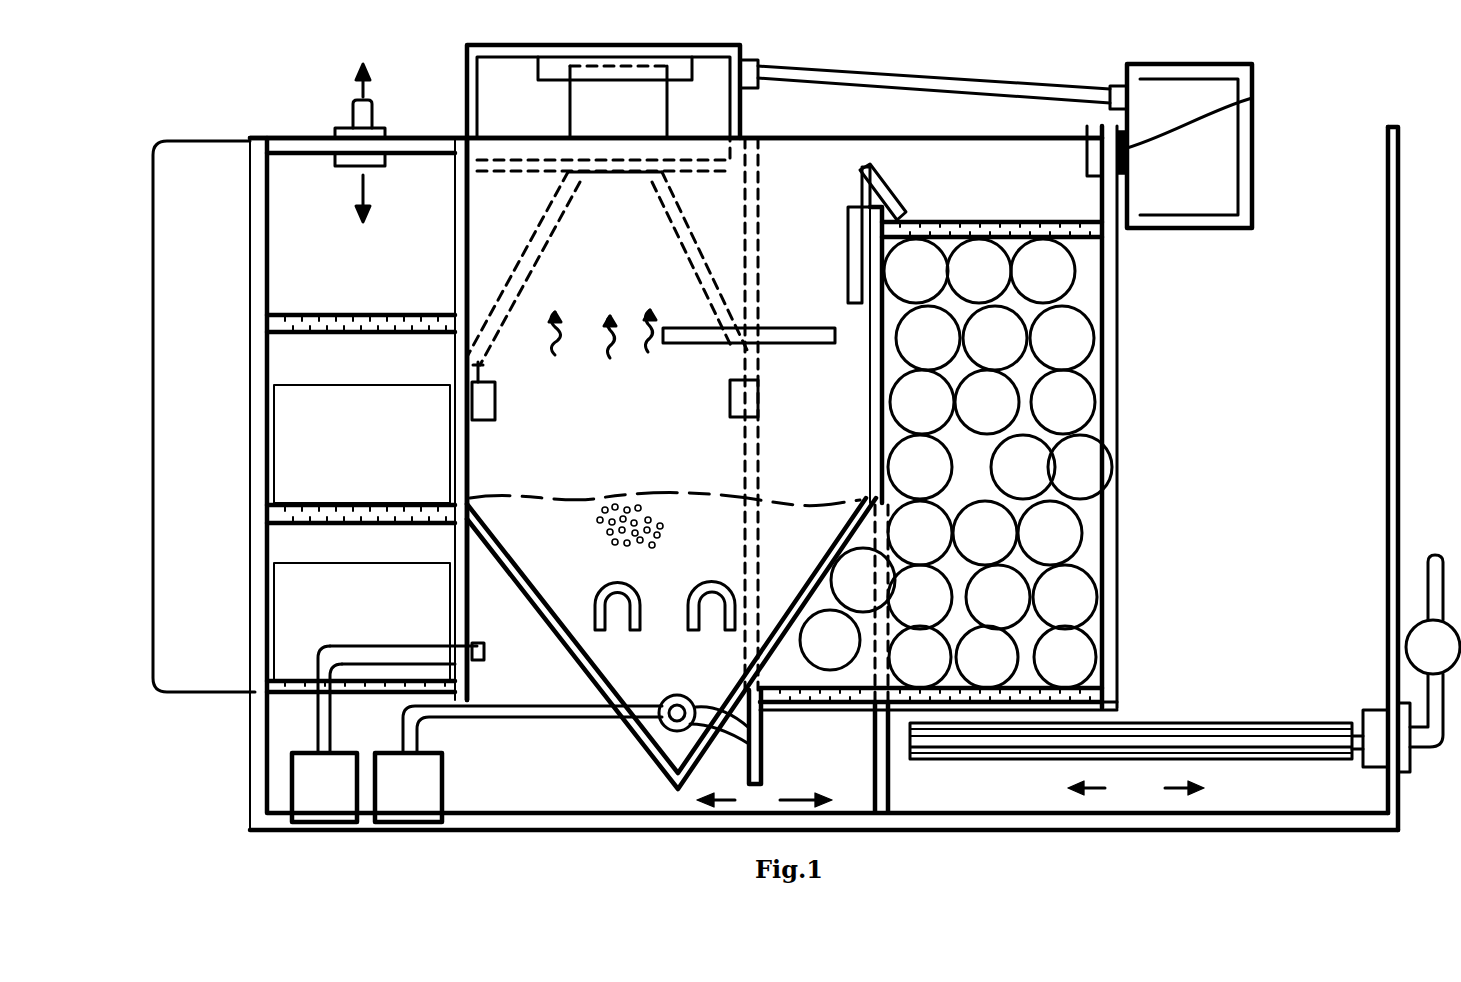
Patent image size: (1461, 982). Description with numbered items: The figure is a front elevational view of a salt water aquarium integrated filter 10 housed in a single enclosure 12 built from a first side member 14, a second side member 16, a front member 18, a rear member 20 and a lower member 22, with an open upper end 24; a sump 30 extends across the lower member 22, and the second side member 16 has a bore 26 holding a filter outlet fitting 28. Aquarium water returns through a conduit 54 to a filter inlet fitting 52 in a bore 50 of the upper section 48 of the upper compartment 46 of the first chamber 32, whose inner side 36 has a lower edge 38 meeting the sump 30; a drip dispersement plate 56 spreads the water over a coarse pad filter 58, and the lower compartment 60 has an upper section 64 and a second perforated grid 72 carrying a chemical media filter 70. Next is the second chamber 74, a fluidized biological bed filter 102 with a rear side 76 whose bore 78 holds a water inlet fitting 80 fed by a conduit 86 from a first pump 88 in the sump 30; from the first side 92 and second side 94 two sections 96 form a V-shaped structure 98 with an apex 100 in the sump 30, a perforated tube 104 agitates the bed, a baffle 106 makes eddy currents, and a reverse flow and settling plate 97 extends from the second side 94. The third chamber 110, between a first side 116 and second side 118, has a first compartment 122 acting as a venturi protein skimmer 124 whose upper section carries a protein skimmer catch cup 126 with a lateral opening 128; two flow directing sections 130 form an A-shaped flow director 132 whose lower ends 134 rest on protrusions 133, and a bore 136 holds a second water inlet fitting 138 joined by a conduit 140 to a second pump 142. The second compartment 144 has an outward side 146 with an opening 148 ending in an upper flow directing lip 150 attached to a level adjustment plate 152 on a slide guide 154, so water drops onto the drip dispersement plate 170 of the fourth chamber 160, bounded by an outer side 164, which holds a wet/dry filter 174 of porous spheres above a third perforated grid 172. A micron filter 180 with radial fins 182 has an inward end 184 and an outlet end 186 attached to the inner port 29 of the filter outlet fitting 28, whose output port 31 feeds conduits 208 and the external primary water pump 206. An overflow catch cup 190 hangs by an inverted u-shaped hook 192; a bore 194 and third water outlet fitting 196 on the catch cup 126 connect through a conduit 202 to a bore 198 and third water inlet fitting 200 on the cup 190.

The salt water aquarium integrated filter 10 is at (1354, 60).
The enclosure 12 is at (1392, 205).
The first side member 14 is at (258, 278).
The second side member 16 is at (1390, 300).
The front member 18 is at (300, 308).
The rear member 20 is at (1103, 558).
The lower member 22 is at (990, 822).
The upper end 24 is at (822, 132).
The bore 26 is at (1376, 712).
The filter outlet fitting 28 is at (1402, 773).
The inner port 29 is at (1362, 755).
The sump 30 is at (950, 798).
The output port 31 is at (1412, 748).
The first chamber 32 is at (150, 410).
The inner side 36 is at (478, 198).
The lower edge 38 is at (478, 696).
The upper compartment 46 is at (282, 372).
The upper section 48 is at (290, 158).
The bore 50 is at (335, 160).
The filter inlet fitting 52 is at (335, 134).
The conduit 54 is at (353, 112).
The drip dispersement plate 56 is at (295, 335).
The coarse pad filter 58 is at (290, 445).
The lower compartment 60 is at (285, 545).
The upper section 64 is at (278, 512).
The chemical media filter 70 is at (290, 628).
The second perforated grid 72 is at (278, 683).
The second chamber 74 is at (612, 675).
The rear side 76 is at (552, 433).
The bore 78 is at (762, 742).
The water inlet fitting 80 is at (762, 726).
The conduit 86 is at (540, 714).
The first pump 88 is at (408, 787).
The first side 92 is at (470, 470).
The second side 94 is at (875, 485).
The sections 96 is at (492, 530).
The reverse flow and settling plate 97 is at (749, 358).
The V-shaped structure 98 is at (594, 662).
The apex 100 is at (670, 782).
The fluidized biological bed filter 102 is at (618, 508).
The perforated tube 104 is at (684, 698).
The baffle 106 is at (617, 585).
The third chamber 110 is at (674, 296).
The first side 116 is at (473, 238).
The second side 118 is at (742, 200).
The first compartment 122 is at (640, 242).
The venturi protein skimmer 124 is at (633, 312).
The protein skimmer catch cup 126 is at (544, 126).
The lateral opening 128 is at (639, 172).
The flow directing sections 130 is at (602, 349).
The A-shaped flow director 132 is at (550, 297).
The protrusions 133 is at (490, 405).
The lower ends 134 is at (482, 372).
The bore 136 is at (482, 650).
The second water inlet fitting 138 is at (455, 642).
The conduit 140 is at (318, 727).
The second pump 142 is at (324, 787).
The second compartment 144 is at (779, 378).
The outward side 146 is at (870, 452).
The opening 148 is at (899, 158).
The upper flow directing lip 150 is at (890, 205).
The level adjustment plate 152 is at (860, 193).
The slide guide 154 is at (848, 258).
The fourth chamber 160 is at (1112, 318).
The outer side 164 is at (1112, 372).
The drip dispersement plate 170 is at (1092, 230).
The third perforated grid 172 is at (1118, 662).
The wet/dry filter 174 is at (1082, 475).
The micron filter 180 is at (1192, 748).
The radial fins 182 is at (1148, 745).
The inward end 184 is at (908, 748).
The outlet end 186 is at (1355, 730).
The overflow catch cup 190 is at (1252, 180).
The inverted u-shaped hook 192 is at (1250, 110).
The bore 194 is at (745, 60).
The third water outlet fitting 196 is at (758, 84).
The bore 198 is at (1112, 75).
The third water inlet fitting 200 is at (1110, 100).
The conduit 202 is at (935, 78).
The primary water pump 206 is at (1433, 647).
The conduits 208 is at (1428, 585).